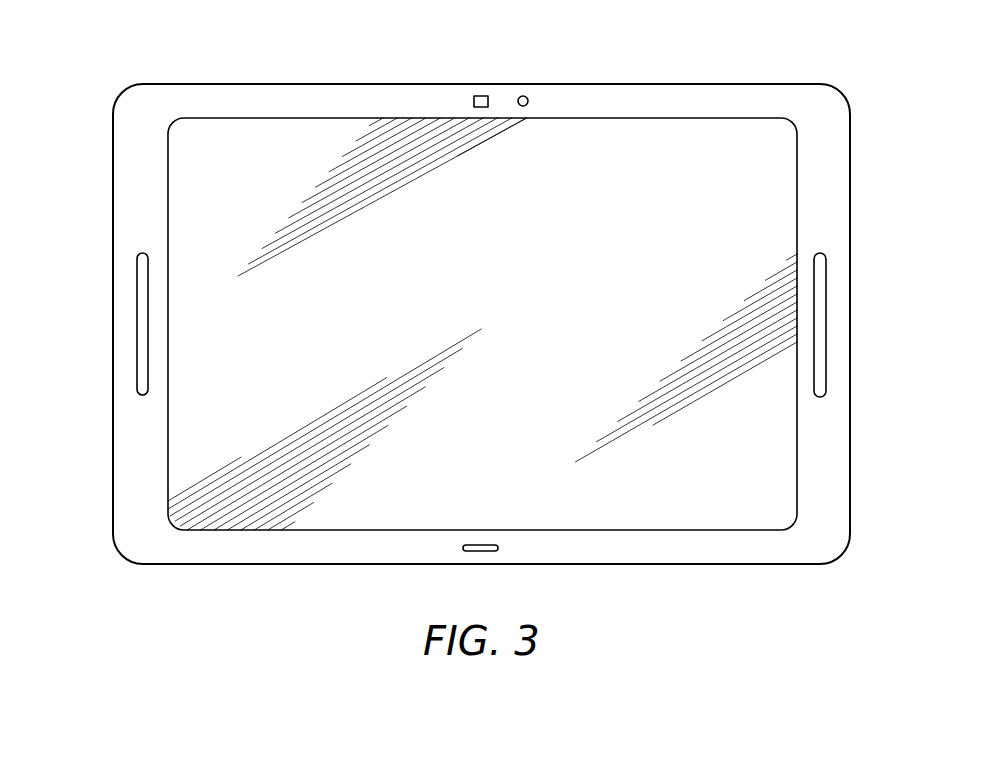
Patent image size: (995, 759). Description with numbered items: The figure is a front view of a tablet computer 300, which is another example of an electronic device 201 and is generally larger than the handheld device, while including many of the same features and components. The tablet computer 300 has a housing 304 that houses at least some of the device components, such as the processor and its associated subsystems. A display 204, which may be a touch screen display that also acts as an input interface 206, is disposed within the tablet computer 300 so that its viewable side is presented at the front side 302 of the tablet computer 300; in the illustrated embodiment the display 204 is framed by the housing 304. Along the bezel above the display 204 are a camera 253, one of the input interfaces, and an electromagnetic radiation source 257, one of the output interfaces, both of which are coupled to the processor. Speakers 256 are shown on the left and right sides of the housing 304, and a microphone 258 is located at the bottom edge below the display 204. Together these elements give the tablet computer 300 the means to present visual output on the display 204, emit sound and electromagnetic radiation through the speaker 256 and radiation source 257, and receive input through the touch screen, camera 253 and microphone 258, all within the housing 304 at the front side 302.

The tablet computer 300 is at (731, 74).
The electronic device 201 is at (804, 74).
The display 204 is at (637, 118).
The input interface 206 is at (320, 118).
The camera 253 is at (481, 96).
The electromagnetic radiation source 257 is at (524, 96).
The microphone 258 is at (481, 551).
The speaker 256 is at (137, 322).
The front side 302 is at (124, 427).
The housing 304 is at (113, 186).